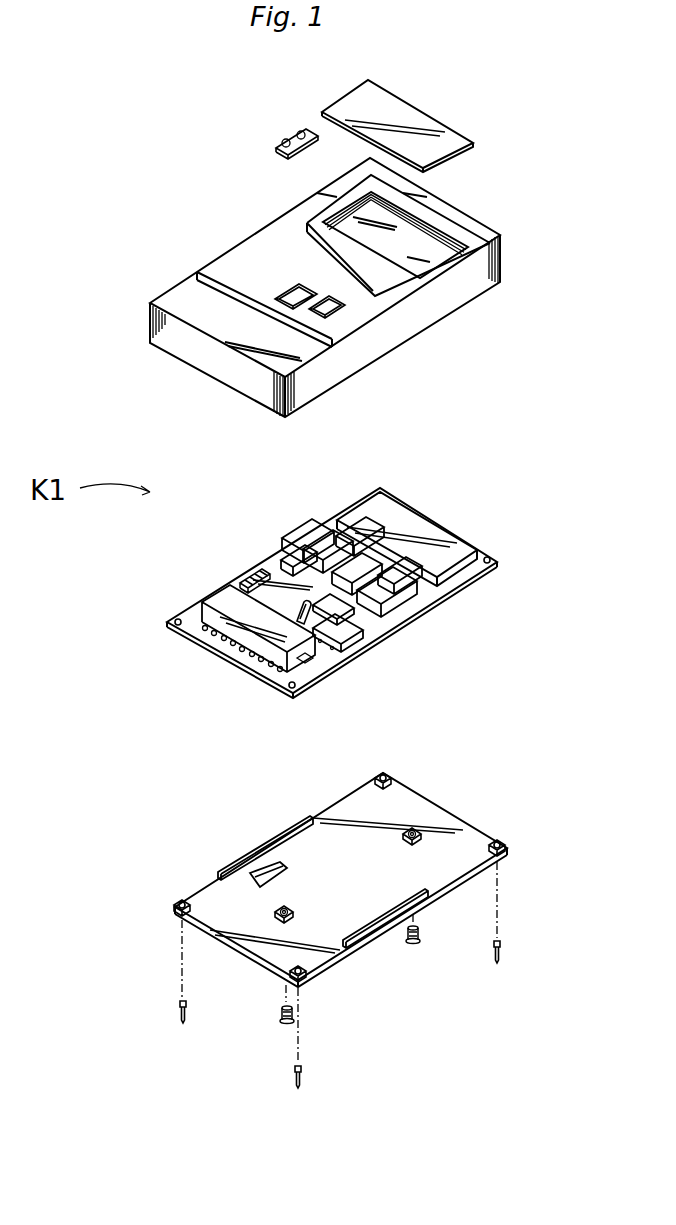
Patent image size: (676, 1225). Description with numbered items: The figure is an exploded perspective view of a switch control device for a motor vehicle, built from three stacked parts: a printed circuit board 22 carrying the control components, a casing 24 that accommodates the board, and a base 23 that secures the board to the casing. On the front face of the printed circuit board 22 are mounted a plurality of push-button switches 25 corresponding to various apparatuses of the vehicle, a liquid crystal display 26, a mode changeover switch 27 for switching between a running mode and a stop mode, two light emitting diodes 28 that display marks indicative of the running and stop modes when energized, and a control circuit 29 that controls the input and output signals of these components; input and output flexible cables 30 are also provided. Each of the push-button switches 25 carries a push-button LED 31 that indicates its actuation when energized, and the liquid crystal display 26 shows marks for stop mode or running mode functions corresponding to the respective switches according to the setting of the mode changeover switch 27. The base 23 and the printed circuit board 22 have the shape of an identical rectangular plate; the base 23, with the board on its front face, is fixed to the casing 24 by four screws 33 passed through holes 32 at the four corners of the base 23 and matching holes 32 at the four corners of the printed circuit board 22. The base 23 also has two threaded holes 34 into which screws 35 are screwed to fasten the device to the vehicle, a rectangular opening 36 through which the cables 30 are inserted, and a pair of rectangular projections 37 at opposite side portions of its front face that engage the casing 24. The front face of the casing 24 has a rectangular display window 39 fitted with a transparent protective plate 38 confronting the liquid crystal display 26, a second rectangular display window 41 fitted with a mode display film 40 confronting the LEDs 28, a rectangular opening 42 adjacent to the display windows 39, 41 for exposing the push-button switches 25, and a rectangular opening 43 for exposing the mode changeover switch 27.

The printed circuit board 22 is at (473, 568).
The base 23 is at (467, 840).
The casing 24 is at (500, 250).
The push-button switches 25 is at (293, 535).
The liquid crystal display 26 is at (433, 537).
The mode changeover switch 27 is at (357, 617).
The light emitting diodes 28 is at (300, 620).
The control circuit 29 is at (242, 627).
The input and output flexible cables 30 is at (247, 570).
The push-button LED 31 is at (370, 540).
The holes 32 is at (490, 557).
The screws 33 is at (188, 1008).
The threaded holes 34 is at (413, 833).
The screws 35 is at (420, 932).
The rectangular opening 36 is at (267, 873).
The rectangular projections 37 is at (293, 828).
The transparent protective plate 38 is at (417, 107).
The display window 39 is at (417, 220).
The mode display film 40 is at (280, 143).
The display window 41 is at (293, 292).
The rectangular opening 42 is at (303, 247).
The rectangular opening 43 is at (337, 317).